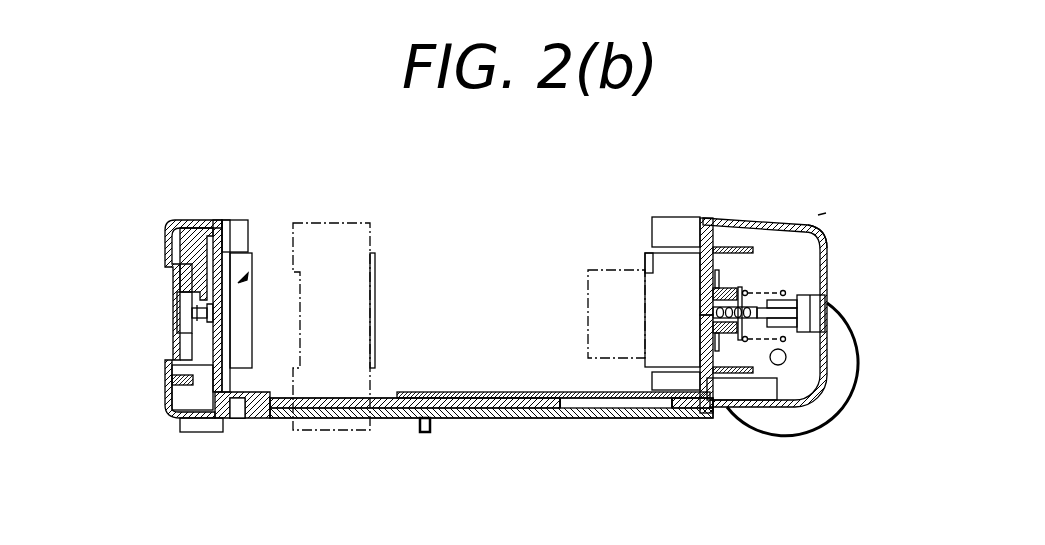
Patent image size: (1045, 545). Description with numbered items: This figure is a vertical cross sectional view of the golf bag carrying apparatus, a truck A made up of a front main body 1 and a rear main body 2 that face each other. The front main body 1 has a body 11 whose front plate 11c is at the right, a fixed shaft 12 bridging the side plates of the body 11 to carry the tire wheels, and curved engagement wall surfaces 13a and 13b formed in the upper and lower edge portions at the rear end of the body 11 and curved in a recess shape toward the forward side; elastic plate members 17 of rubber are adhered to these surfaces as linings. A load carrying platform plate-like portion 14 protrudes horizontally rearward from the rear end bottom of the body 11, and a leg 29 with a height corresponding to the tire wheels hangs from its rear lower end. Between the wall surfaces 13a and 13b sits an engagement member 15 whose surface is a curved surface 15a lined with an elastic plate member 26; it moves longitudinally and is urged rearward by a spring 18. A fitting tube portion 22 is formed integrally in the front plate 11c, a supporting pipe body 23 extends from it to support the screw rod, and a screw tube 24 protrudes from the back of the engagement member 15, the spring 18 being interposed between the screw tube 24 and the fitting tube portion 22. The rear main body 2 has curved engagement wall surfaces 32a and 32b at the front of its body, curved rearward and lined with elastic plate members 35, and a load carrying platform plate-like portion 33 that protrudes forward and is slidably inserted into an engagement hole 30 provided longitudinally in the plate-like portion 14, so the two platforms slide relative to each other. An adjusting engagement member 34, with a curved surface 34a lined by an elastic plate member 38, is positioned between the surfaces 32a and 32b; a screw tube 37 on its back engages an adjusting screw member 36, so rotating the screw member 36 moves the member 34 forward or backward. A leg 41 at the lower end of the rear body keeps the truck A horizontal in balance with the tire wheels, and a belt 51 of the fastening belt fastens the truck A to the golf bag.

The front main body 1 is at (822, 211).
The rear main body 2 is at (160, 215).
The body 11 is at (772, 211).
The front plate 11c is at (830, 250).
The fixed shaft 12 is at (823, 387).
The curved engagement wall surface 13a is at (705, 218).
The curved engagement wall surface 13b is at (733, 408).
The load carrying platform plate-like portion 14 is at (455, 392).
The engagement member 15 is at (650, 310).
The curved surface 15a is at (645, 265).
The elastic plate member 17 is at (697, 237).
The spring 18 is at (783, 291).
The fitting tube portion 22 is at (827, 280).
The supporting pipe body 23 is at (787, 355).
The screw tube 24 is at (770, 392).
The elastic plate member 26 is at (700, 347).
The leg 29 is at (427, 432).
The engagement hole 30 is at (580, 408).
The curved engagement wall surface 32a is at (198, 228).
The curved engagement wall surface 32b is at (172, 416).
The load carrying platform plate-like portion 33 is at (358, 430).
The adjusting engagement member 34 is at (250, 272).
The curved surface 34a is at (213, 275).
The elastic plate member 35 is at (238, 253).
The adjusting screw member 36 is at (177, 318).
The screw tube 37 is at (210, 337).
The elastic plate member 38 is at (233, 337).
The leg 41 is at (203, 432).
The belt 51 is at (588, 288).
The truck A is at (740, 181).